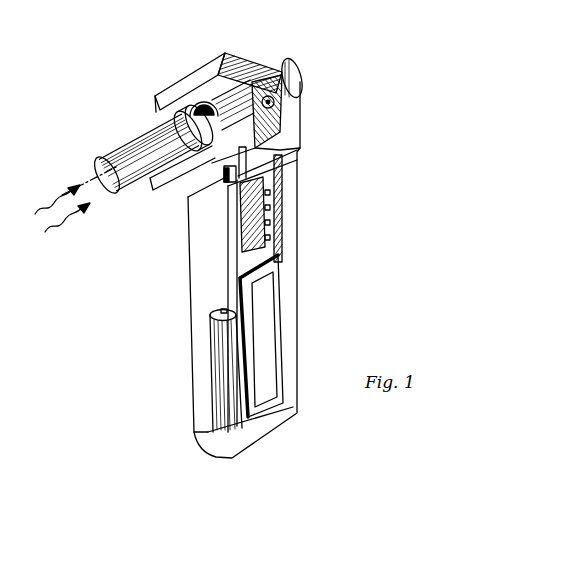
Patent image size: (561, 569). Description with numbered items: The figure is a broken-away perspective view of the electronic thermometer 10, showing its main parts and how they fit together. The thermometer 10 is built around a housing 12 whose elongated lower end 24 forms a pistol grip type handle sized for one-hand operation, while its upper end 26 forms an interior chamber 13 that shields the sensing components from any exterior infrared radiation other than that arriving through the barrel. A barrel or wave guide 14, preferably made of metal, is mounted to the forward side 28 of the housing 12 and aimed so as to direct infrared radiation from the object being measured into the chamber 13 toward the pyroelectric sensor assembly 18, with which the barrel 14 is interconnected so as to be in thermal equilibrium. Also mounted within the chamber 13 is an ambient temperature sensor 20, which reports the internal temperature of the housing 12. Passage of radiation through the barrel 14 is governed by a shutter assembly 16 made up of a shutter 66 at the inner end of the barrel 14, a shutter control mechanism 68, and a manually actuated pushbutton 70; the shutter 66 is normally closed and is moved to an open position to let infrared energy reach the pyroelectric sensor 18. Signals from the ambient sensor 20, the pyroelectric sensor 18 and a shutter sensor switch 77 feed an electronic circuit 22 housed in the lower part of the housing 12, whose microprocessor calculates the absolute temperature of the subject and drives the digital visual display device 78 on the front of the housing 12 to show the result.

The electronic thermometer 10 is at (114, 348).
The housing 12 is at (300, 193).
The interior chamber 13 is at (150, 184).
The barrel 14 is at (110, 152).
The shutter assembly 16 is at (262, 118).
The pyroelectric sensor assembly 18 is at (212, 103).
The ambient temperature sensor 20 is at (212, 203).
The electronic circuit 22 is at (268, 248).
The lower end 24 is at (191, 383).
The upper end 26 is at (178, 90).
The forward side 28 is at (190, 203).
The shutter 66 is at (175, 111).
The shutter control mechanism 68 is at (250, 70).
The pushbutton 70 is at (297, 66).
The shutter sensor switch 77 is at (283, 180).
The digital visual display device 78 is at (277, 293).